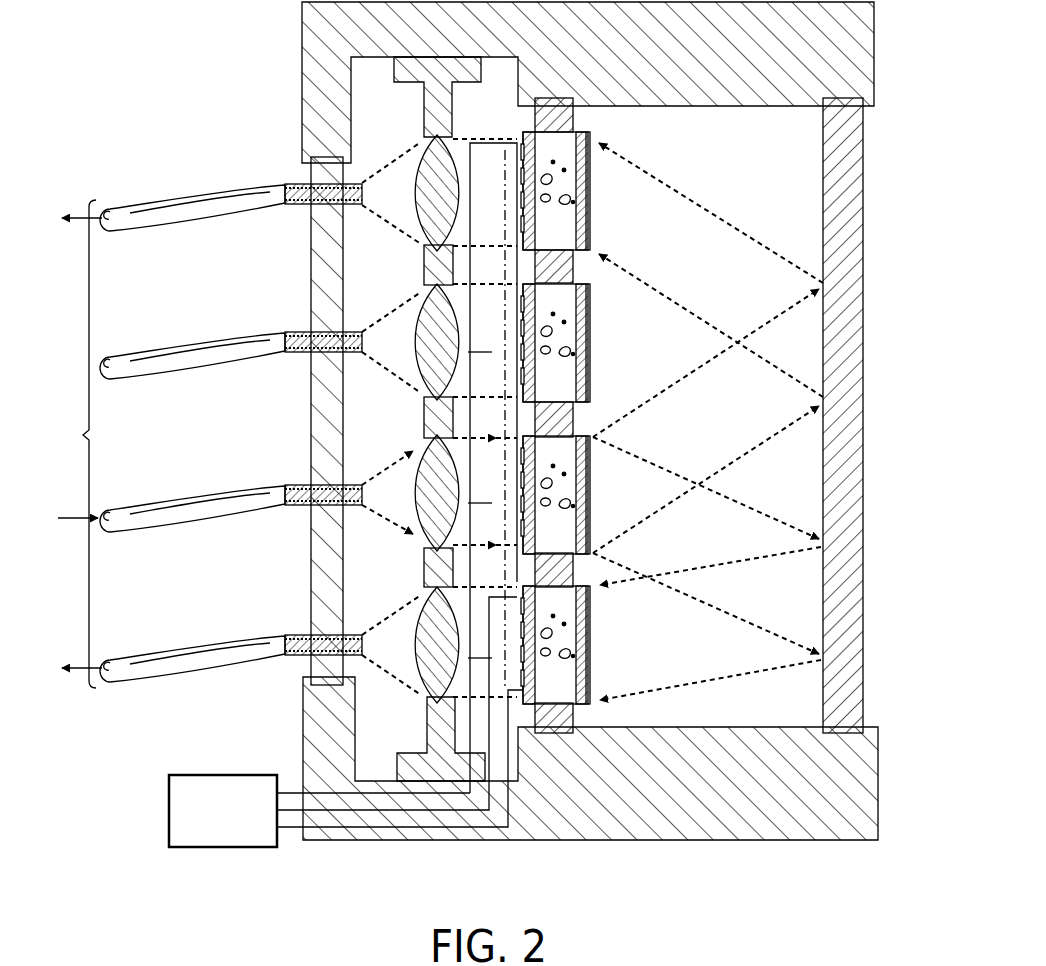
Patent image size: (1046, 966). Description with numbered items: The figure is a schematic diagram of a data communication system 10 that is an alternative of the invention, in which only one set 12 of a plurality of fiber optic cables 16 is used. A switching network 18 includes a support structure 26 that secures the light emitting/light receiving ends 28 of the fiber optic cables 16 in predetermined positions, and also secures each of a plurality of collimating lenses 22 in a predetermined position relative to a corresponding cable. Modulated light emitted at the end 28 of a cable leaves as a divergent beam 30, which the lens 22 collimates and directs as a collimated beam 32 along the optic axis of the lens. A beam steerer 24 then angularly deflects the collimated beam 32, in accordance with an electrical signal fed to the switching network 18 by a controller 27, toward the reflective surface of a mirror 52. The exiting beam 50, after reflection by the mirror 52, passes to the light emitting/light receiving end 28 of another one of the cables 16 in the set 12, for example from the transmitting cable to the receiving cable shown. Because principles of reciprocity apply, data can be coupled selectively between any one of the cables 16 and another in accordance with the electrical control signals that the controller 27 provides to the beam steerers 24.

The data communication system 10 is at (212, 67).
The set of fiber optic cables 12 is at (76, 444).
The fiber optic cable 16 is at (186, 197).
The switching network 18 is at (362, 107).
The collimating lens 22 is at (427, 152).
The beam steerer 24 is at (592, 216).
The support structure 26 is at (312, 40).
The controller 27 is at (169, 795).
The light emitting/light receiving end 28 is at (364, 182).
The divergent beam 30 is at (409, 204).
The collimated beam 32 is at (504, 204).
The exiting beam 50 is at (731, 281).
The mirror 52 is at (863, 420).